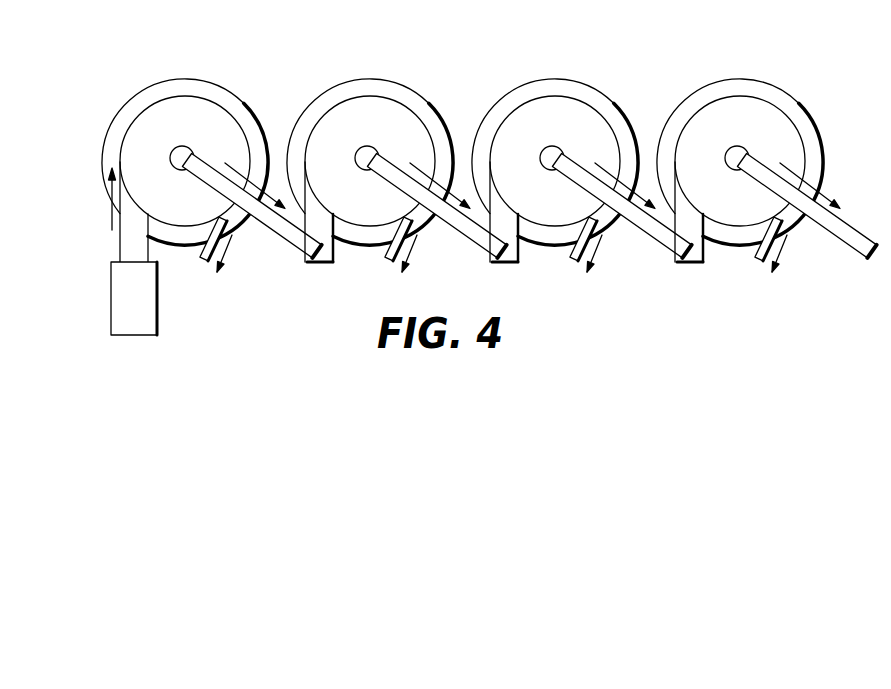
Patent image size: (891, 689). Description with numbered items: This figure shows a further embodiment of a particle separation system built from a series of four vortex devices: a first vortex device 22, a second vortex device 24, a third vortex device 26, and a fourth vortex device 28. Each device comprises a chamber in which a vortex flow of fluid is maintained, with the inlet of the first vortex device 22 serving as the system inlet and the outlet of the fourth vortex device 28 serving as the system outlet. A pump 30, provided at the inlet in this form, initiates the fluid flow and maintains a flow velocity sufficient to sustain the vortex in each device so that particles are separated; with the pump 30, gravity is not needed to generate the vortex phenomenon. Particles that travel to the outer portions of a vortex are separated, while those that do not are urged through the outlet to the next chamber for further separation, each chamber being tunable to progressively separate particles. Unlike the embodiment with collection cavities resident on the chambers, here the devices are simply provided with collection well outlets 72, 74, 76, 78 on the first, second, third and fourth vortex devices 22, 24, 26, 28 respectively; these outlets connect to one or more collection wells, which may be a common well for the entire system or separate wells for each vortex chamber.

The first vortex device 22 is at (213, 84).
The second vortex device 24 is at (398, 84).
The third vortex device 26 is at (583, 84).
The fourth vortex device 28 is at (768, 84).
The pump 30 is at (111, 297).
The collection well outlet 72 is at (203, 262).
The collection well outlet 74 is at (388, 262).
The collection well outlet 76 is at (573, 262).
The collection well outlet 78 is at (758, 262).